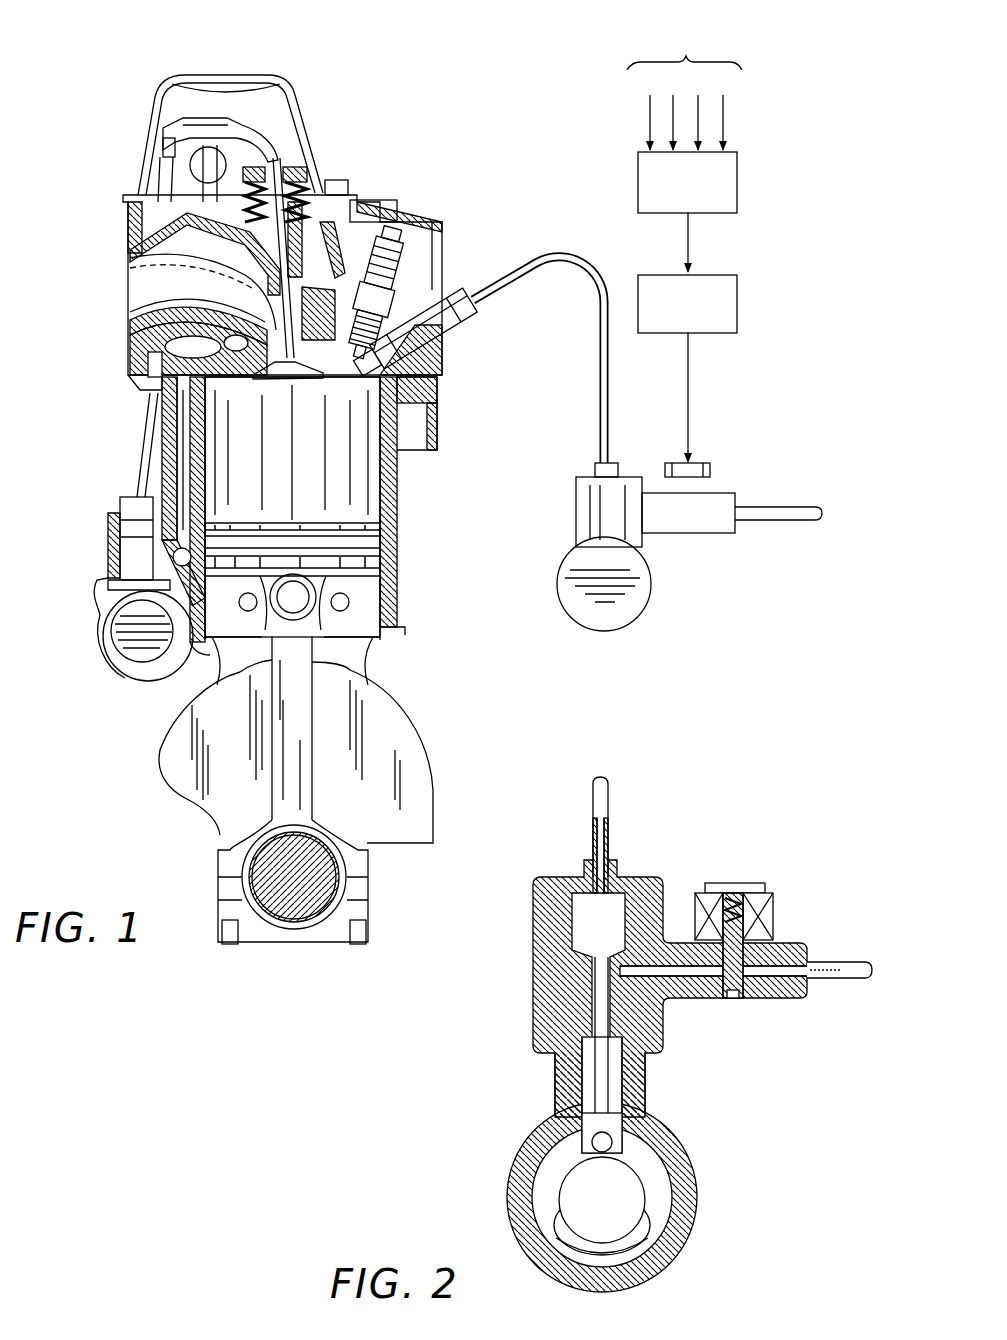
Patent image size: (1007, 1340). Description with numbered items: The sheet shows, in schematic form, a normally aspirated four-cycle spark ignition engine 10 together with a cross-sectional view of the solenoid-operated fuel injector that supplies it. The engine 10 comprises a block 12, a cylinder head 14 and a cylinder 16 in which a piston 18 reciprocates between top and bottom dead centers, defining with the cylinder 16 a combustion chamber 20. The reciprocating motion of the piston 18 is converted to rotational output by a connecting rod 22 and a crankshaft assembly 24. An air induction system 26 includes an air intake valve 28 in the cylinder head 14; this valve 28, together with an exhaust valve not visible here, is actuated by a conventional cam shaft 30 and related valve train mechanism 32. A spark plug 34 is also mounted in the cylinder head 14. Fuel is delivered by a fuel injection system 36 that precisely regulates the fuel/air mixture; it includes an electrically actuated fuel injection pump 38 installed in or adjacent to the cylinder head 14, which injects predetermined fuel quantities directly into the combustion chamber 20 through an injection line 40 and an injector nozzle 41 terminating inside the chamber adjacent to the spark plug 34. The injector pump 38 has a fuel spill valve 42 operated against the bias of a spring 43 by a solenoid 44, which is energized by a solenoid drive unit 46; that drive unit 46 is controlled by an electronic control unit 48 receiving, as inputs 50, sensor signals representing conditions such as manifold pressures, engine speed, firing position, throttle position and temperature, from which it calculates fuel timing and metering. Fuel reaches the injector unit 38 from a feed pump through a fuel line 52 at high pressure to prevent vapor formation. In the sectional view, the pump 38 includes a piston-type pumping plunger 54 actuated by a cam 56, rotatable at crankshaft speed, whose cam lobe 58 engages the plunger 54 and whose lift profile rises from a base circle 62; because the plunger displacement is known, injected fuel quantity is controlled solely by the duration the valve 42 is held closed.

In FIG. 1, the engine 10 is at (400, 112).
In FIG. 1, the block 12 is at (397, 495).
In FIG. 1, the cylinder head 14 is at (128, 237).
In FIG. 1, the cylinder 16 is at (398, 470).
In FIG. 1, the piston 18 is at (380, 597).
In FIG. 1, the combustion chamber 20 is at (140, 390).
In FIG. 1, the connecting rod 22 is at (313, 743).
In FIG. 1, the crankshaft assembly 24 is at (197, 793).
In FIG. 1, the air induction system 26 is at (162, 272).
In FIG. 1, the air intake valve 28 is at (140, 332).
In FIG. 1, the cam shaft 30 is at (128, 645).
In FIG. 1, the valve train mechanism 32 is at (258, 135).
In FIG. 1, the spark plug 34 is at (402, 237).
In FIG. 1, the fuel injection system 36 is at (732, 418).
In FIG. 1, the fuel injection pump 38 is at (640, 623).
In FIG. 2, the fuel injection pump 38 is at (500, 1058).
In FIG. 1, the injection line 40 is at (548, 252).
In FIG. 2, the injection line 40 is at (610, 792).
In FIG. 1, the injector nozzle 41 is at (460, 327).
In FIG. 2, the fuel spill valve 42 is at (735, 1000).
In FIG. 2, the spring 43 is at (732, 900).
In FIG. 1, the solenoid 44 is at (712, 476).
In FIG. 2, the solenoid 44 is at (773, 898).
In FIG. 1, the solenoid drive unit 46 is at (737, 290).
In FIG. 1, the electronic control unit 48 is at (737, 182).
In FIG. 1, the inputs 50 is at (684, 80).
In FIG. 1, the fuel line 52 is at (810, 523).
In FIG. 2, the fuel line 52 is at (857, 960).
In FIG. 2, the pumping plunger 54 is at (600, 1088).
In FIG. 2, the cam 56 is at (620, 1187).
In FIG. 2, the cam lobe 58 is at (553, 1232).
In FIG. 2, the base circle 62 is at (630, 1238).